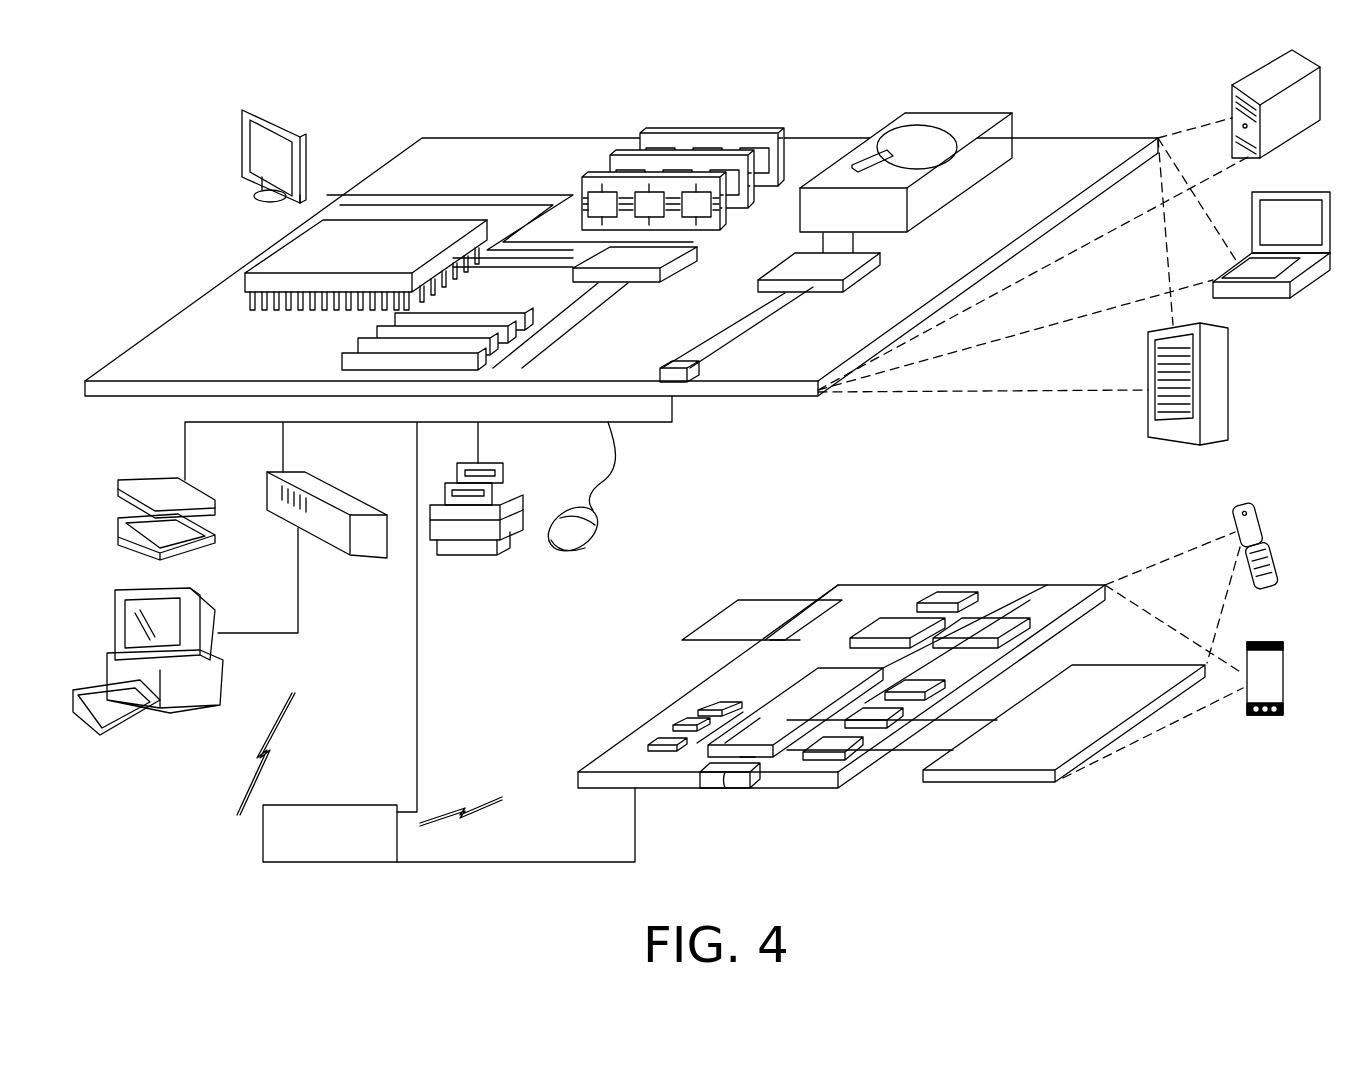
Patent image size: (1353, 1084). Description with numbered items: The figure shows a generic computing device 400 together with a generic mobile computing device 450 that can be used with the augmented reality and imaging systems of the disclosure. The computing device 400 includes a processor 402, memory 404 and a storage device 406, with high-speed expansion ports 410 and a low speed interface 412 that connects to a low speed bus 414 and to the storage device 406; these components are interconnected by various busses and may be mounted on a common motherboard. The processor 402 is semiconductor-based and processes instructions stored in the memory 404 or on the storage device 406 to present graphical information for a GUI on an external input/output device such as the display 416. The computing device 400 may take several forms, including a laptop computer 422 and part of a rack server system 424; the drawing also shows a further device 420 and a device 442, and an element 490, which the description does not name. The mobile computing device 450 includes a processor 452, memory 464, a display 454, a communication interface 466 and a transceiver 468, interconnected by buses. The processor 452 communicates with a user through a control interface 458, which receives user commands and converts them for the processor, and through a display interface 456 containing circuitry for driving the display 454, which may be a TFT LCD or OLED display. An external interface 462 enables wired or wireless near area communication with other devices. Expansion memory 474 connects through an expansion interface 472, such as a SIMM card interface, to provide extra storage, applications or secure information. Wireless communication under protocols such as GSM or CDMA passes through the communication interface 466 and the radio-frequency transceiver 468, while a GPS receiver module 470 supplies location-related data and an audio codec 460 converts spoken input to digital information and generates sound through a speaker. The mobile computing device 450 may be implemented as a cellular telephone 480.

The computing device 400 is at (374, 90).
The processor 402 is at (264, 256).
The memory 404 is at (722, 133).
The storage device 406 is at (950, 114).
The high-speed expansion ports 410 is at (362, 342).
The low speed interface 412 is at (792, 264).
The low speed bus 414 is at (678, 368).
The display 416 is at (247, 108).
The remote computer 420 is at (1252, 82).
The laptop computer 422 is at (1305, 194).
The rack server system 424 is at (1230, 383).
The smartphone 442 is at (1262, 642).
The mobile computer device 450 is at (1138, 778).
The processor 452 is at (766, 713).
The display 454 is at (1105, 682).
The display interface 456 is at (843, 750).
The control interface 458 is at (880, 712).
The audio codec 460 is at (925, 682).
The external interface 462 is at (722, 775).
The memory 464 is at (682, 722).
The communication interface 466 is at (897, 622).
The transceiver 468 is at (990, 620).
The GPS receiver module 470 is at (948, 593).
The expansion interface 472 is at (822, 600).
The expansion memory 474 is at (740, 600).
The cellular telephone 480 is at (1240, 505).
The network 490 is at (408, 870).